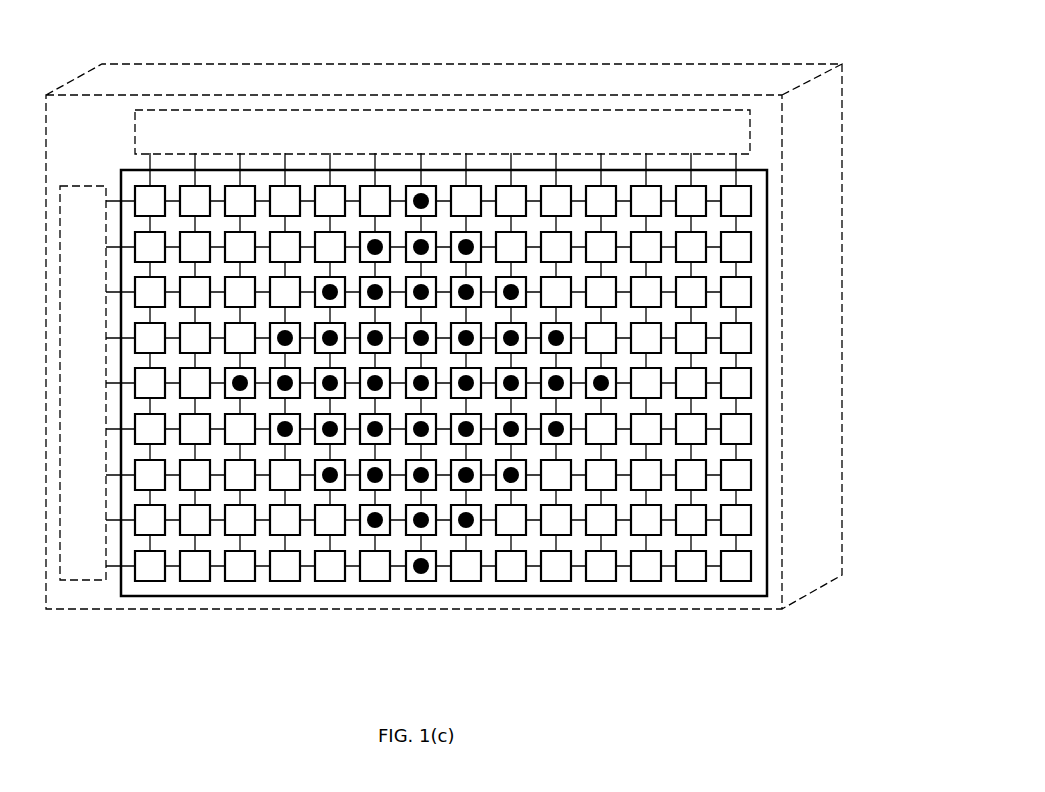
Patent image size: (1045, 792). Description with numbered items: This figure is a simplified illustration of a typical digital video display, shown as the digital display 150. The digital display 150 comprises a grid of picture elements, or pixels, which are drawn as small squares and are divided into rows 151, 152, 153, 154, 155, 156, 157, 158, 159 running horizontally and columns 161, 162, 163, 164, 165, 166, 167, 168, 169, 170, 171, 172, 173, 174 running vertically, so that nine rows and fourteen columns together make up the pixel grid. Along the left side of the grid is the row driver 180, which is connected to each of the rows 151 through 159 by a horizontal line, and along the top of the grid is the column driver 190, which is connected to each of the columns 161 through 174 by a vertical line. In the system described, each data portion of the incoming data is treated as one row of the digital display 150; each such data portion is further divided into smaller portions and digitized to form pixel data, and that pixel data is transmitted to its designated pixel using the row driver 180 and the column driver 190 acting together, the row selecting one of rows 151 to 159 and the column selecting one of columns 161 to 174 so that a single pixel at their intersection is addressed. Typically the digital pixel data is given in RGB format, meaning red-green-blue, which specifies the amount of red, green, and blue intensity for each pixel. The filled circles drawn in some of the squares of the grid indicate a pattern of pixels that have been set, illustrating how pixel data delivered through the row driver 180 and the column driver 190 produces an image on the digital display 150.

The digital display 150 is at (752, 30).
The row of pixels 151 is at (751, 201).
The row of pixels 152 is at (751, 247).
The row of pixels 153 is at (751, 292).
The row of pixels 154 is at (751, 338).
The row of pixels 155 is at (751, 383).
The row of pixels 156 is at (751, 429).
The row of pixels 157 is at (751, 475).
The row of pixels 158 is at (751, 520).
The row of pixels 159 is at (751, 566).
The column of pixels 161 is at (150, 581).
The column of pixels 162 is at (195, 581).
The column of pixels 163 is at (240, 581).
The column of pixels 164 is at (285, 581).
The column of pixels 165 is at (330, 581).
The column of pixels 166 is at (375, 581).
The column of pixels 167 is at (421, 581).
The column of pixels 168 is at (466, 581).
The column of pixels 169 is at (511, 581).
The column of pixels 170 is at (556, 581).
The column of pixels 171 is at (601, 581).
The column of pixels 172 is at (646, 581).
The column of pixels 173 is at (691, 581).
The column of pixels 174 is at (736, 581).
The row driver 180 is at (83, 383).
The column driver 190 is at (550, 142).